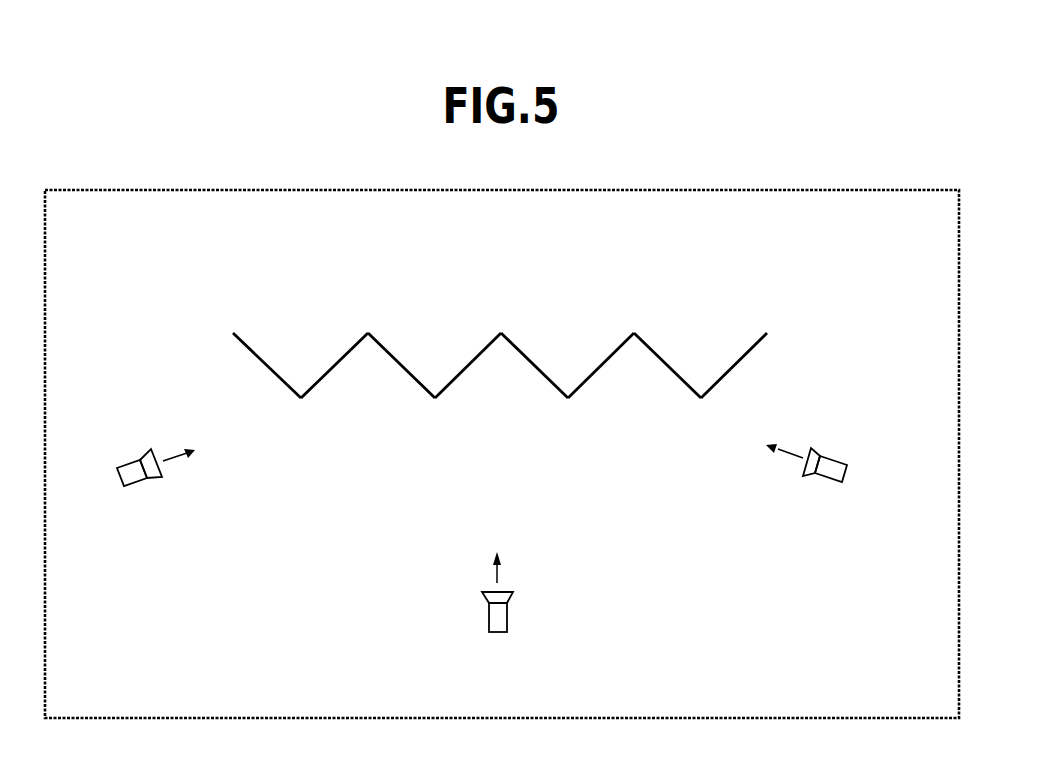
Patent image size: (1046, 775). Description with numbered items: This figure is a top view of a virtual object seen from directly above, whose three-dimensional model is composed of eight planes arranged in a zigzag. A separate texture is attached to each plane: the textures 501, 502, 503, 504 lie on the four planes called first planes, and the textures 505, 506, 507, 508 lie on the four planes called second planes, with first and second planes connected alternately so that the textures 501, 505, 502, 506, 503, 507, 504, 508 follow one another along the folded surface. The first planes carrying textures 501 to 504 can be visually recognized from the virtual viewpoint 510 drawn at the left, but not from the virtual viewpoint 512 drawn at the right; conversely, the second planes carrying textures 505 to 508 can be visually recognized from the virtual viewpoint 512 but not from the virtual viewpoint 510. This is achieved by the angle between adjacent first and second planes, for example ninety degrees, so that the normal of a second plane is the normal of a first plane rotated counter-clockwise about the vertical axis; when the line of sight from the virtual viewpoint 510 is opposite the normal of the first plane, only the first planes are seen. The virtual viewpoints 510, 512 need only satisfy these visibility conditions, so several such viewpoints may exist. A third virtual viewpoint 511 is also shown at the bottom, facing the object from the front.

The texture 501 is at (245, 348).
The texture 502 is at (383, 350).
The texture 503 is at (517, 350).
The texture 504 is at (648, 353).
The texture 505 is at (316, 388).
The texture 506 is at (453, 383).
The texture 507 is at (585, 385).
The texture 508 is at (717, 387).
The virtual viewpoint 510 is at (130, 463).
The virtual viewpoint 511 is at (488, 618).
The virtual viewpoint 512 is at (837, 458).